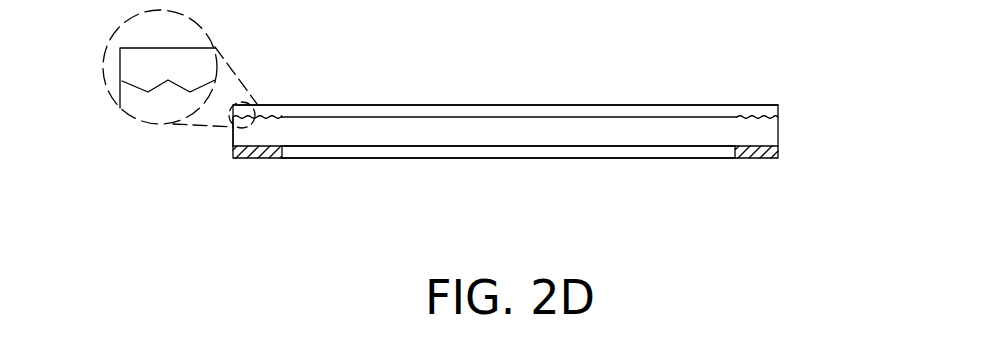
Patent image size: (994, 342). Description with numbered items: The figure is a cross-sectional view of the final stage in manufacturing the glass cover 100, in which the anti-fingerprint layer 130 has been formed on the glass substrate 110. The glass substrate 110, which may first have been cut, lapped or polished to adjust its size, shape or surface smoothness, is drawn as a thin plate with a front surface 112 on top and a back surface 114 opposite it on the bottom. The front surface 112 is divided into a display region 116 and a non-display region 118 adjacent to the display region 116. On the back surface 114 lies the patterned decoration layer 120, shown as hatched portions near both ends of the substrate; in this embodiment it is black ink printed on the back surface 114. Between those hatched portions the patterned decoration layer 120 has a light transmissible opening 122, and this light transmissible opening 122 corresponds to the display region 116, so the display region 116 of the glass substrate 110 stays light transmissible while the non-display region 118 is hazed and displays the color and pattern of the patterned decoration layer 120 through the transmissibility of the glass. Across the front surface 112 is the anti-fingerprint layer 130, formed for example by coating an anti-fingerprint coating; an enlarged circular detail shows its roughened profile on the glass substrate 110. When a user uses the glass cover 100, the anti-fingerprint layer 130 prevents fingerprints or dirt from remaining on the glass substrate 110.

The glass cover 100 is at (480, 101).
The glass substrate 110 is at (130, 100).
The front surface 112 is at (755, 66).
The back surface 114 is at (751, 158).
The display region 116 is at (716, 107).
The non-display region 118 is at (751, 107).
The patterned decoration layer 120 is at (233, 155).
The light transmissible opening 122 is at (302, 170).
The anti-fingerprint layer 130 is at (130, 70).